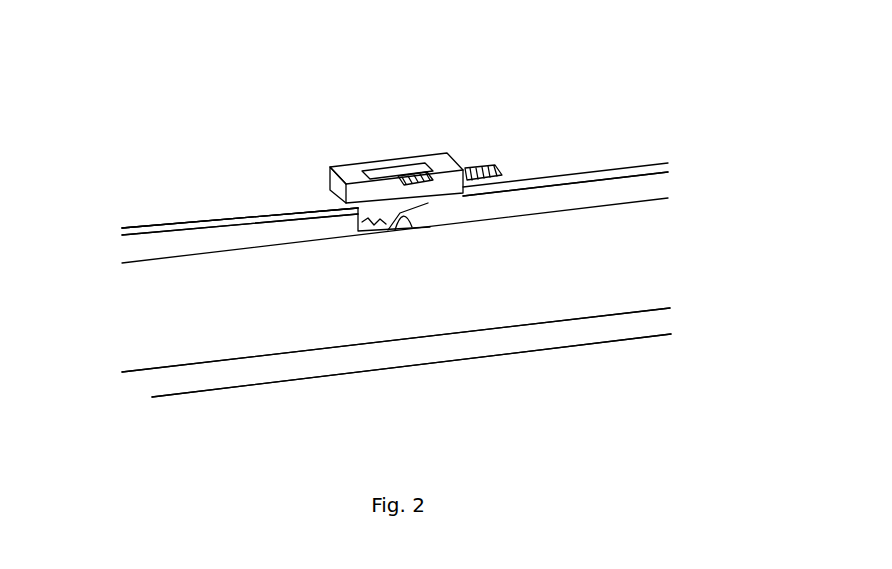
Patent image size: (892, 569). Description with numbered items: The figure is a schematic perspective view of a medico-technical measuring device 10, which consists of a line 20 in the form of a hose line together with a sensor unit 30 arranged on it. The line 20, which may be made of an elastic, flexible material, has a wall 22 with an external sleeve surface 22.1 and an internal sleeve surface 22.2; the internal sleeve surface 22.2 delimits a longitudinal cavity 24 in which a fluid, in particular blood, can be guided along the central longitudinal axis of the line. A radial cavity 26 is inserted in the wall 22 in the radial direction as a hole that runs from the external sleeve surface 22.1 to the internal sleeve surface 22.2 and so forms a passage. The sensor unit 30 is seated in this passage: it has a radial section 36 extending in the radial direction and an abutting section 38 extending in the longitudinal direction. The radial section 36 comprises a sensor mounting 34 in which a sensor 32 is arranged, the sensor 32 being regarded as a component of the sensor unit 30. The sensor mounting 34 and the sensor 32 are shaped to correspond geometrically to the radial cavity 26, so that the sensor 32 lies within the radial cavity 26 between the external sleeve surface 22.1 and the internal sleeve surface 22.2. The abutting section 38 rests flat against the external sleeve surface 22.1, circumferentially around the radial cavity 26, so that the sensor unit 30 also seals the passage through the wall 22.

The medico-technical measuring device 10 is at (466, 86).
The line 20 is at (653, 162).
The wall 22 is at (146, 242).
The external sleeve surface 22.1 is at (208, 223).
The internal sleeve surface 22.2 is at (640, 203).
The longitudinal cavity 24 is at (566, 290).
The radial cavity 26 is at (373, 238).
The sensor unit 30 is at (462, 154).
The sensor 32 is at (388, 232).
The sensor mounting 34 is at (412, 229).
The radial section 36 is at (372, 205).
The abutting section 38 is at (502, 189).